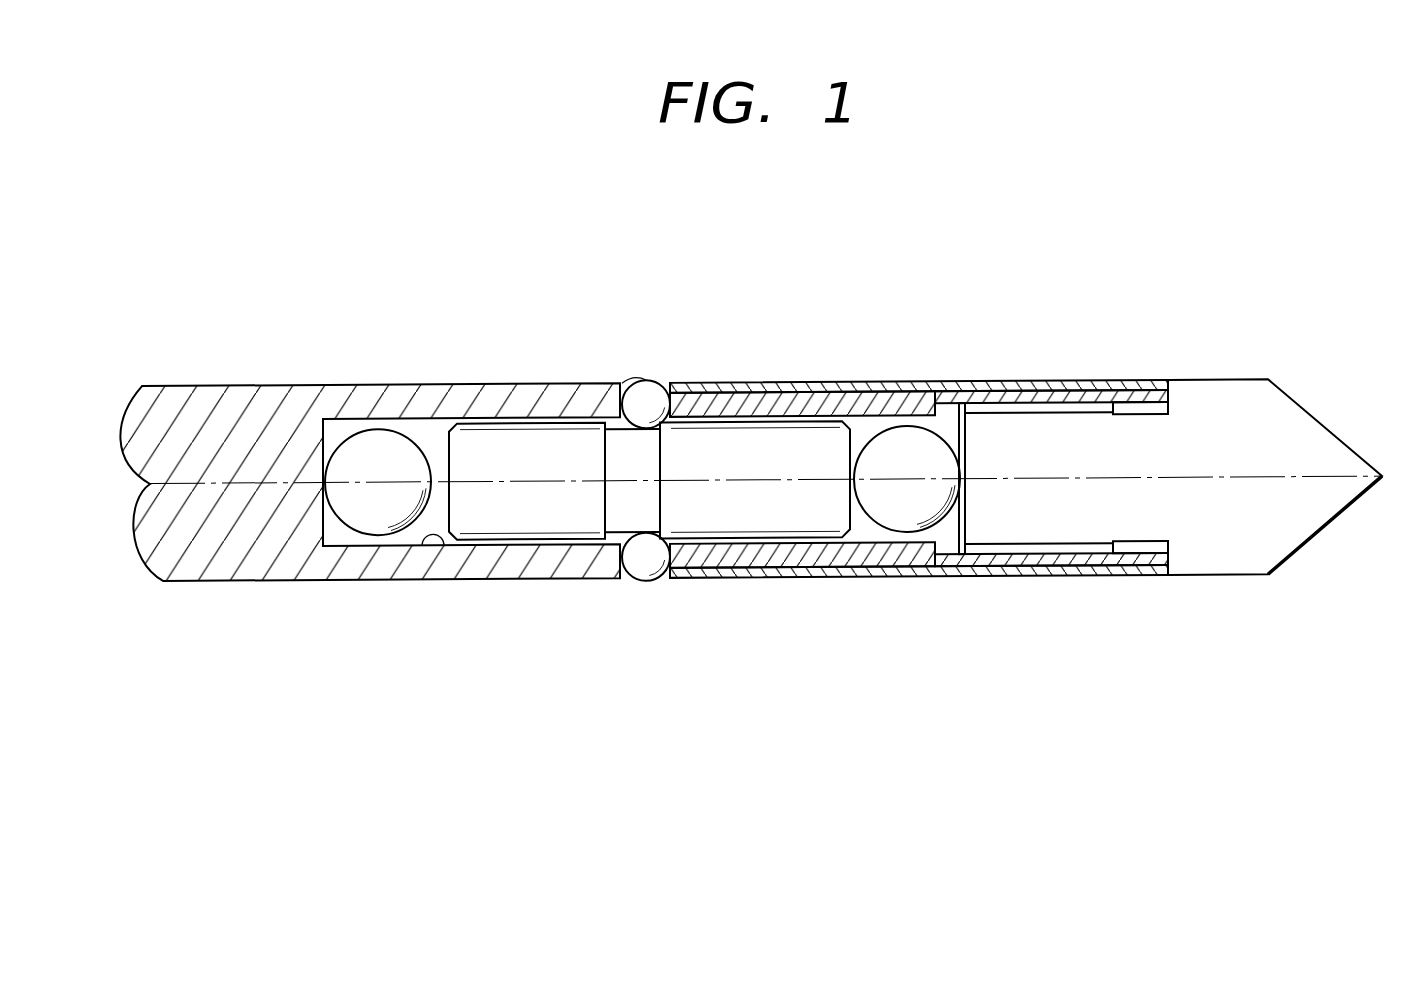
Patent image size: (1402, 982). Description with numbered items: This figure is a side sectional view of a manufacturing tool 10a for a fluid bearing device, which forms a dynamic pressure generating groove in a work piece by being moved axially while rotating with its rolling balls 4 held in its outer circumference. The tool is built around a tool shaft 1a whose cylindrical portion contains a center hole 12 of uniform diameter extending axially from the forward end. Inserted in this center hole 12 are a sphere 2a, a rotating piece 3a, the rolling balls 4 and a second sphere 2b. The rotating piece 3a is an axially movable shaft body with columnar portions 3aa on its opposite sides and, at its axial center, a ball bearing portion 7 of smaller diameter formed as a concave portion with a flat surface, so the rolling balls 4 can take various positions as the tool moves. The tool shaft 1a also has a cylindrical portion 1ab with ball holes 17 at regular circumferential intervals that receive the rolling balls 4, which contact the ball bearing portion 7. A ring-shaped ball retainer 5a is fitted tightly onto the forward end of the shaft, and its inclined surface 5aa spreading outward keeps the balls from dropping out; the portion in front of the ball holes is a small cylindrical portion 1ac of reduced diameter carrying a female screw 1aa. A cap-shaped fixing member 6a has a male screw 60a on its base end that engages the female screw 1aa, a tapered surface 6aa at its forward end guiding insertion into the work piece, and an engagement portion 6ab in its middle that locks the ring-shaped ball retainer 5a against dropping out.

The tool shaft 1a is at (436, 377).
The female screw 1aa is at (1036, 549).
The cylindrical portion 1ab is at (553, 384).
The small cylindrical portion 1ac is at (920, 385).
The sphere 2a is at (372, 440).
The sphere 2b is at (890, 433).
The rotating piece 3a is at (523, 425).
The columnar portion 3aa is at (496, 520).
The rolling ball 4 is at (631, 381).
The ring-shaped ball retainer 5a is at (714, 376).
The inclined surface 5aa is at (643, 380).
The fixing member 6a is at (1239, 375).
The tapered surface 6aa is at (1318, 541).
The engagement portion 6ab is at (1152, 383).
The ball bearing portion 7 is at (578, 580).
The manufacturing tool 10a is at (998, 342).
The center hole 12 is at (426, 546).
The ball hole 17 is at (662, 575).
The male screw 60a is at (1068, 392).